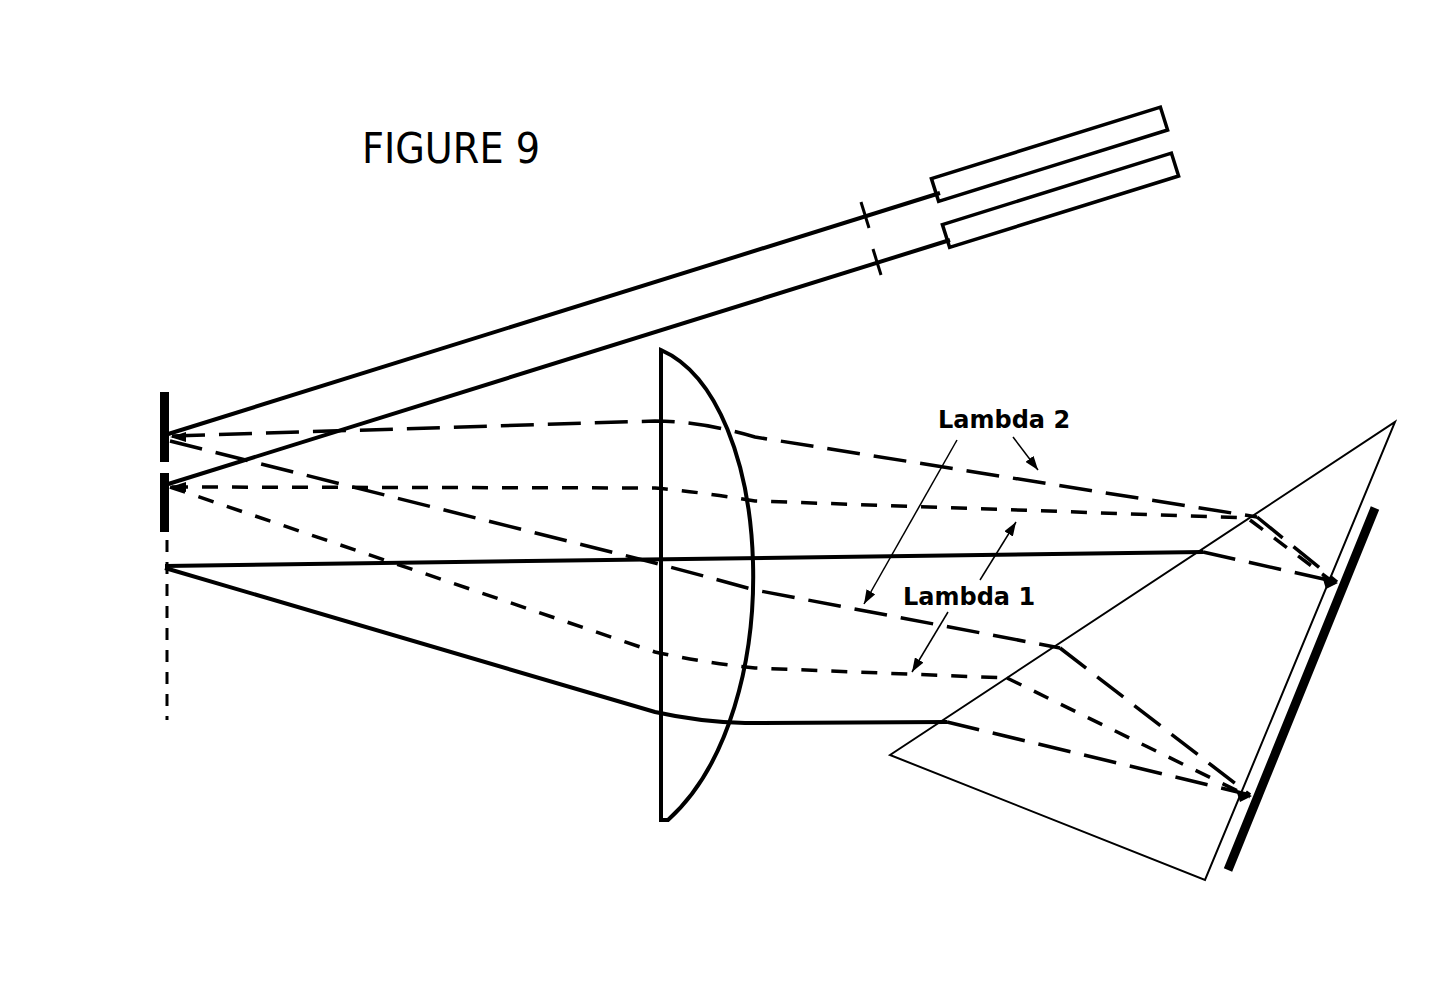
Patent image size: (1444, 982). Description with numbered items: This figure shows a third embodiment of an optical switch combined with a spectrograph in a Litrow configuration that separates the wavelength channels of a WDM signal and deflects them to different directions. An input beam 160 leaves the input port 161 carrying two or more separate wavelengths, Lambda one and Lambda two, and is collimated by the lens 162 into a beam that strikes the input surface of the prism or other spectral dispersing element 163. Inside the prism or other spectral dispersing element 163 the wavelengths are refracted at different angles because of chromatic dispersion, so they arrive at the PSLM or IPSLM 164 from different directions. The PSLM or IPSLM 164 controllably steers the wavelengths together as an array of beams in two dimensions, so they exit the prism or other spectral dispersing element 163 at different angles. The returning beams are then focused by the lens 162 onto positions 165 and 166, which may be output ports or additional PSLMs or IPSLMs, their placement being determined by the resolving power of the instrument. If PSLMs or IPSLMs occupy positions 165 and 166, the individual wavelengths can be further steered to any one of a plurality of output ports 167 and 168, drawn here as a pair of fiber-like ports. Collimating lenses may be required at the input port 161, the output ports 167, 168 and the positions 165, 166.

The input beam 160 is at (180, 690).
The input port 161 is at (222, 586).
The lens 162 is at (723, 763).
The prism or other spectral dispersing element 163 is at (1126, 820).
The PSLM or IPSLM 164 is at (1298, 712).
The output port or PSLM/IPSLM position 165 is at (158, 504).
The output port or PSLM/IPSLM position 166 is at (158, 420).
The output port 167 is at (1040, 146).
The output port 168 is at (1067, 212).